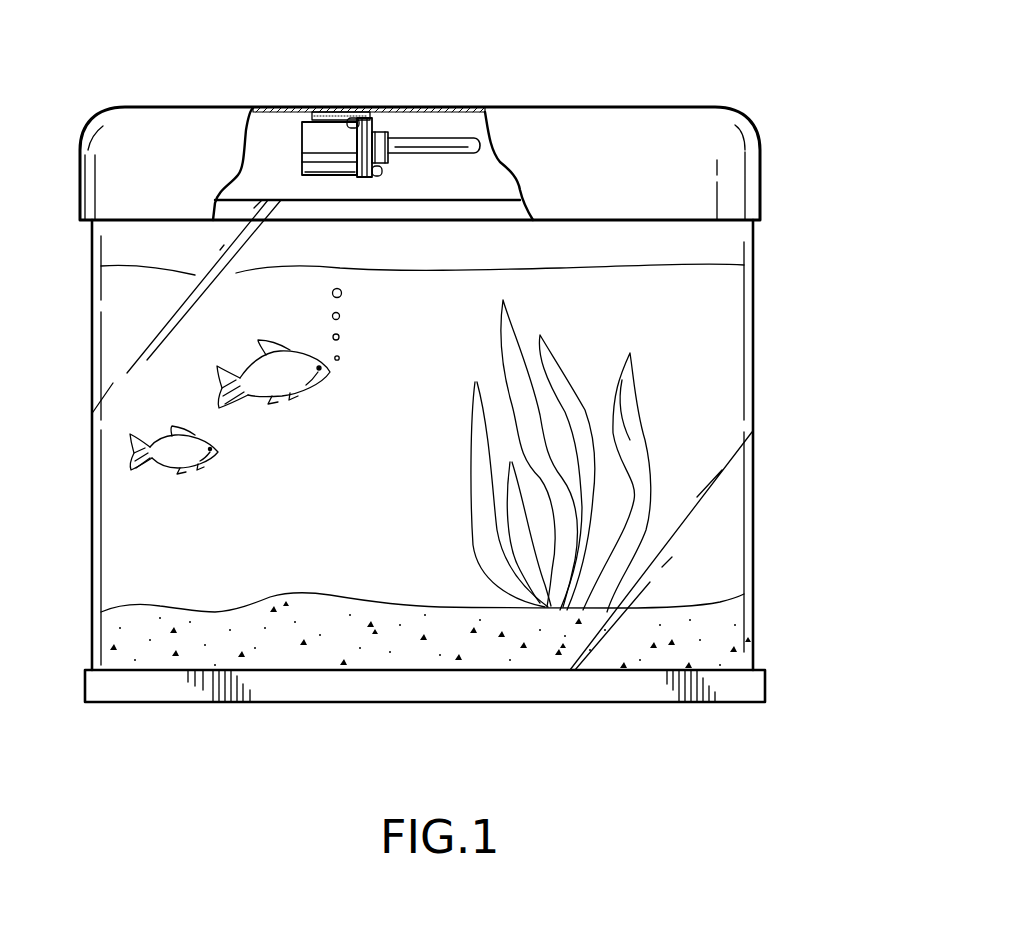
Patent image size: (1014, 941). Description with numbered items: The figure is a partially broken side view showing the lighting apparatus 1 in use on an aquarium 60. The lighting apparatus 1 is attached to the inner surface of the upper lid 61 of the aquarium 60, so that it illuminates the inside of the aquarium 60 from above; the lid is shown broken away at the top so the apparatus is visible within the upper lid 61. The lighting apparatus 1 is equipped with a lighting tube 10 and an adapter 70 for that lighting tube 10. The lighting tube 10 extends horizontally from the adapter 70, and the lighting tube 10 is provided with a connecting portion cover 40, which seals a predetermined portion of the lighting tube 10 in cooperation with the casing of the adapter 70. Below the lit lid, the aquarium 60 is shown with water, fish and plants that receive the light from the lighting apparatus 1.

The lighting apparatus 1 is at (345, 96).
The lighting tube 10 is at (427, 143).
The connecting portion cover 40 is at (377, 130).
The adapter 70 is at (307, 140).
The aquarium 60 is at (755, 353).
The upper lid 61 is at (682, 118).